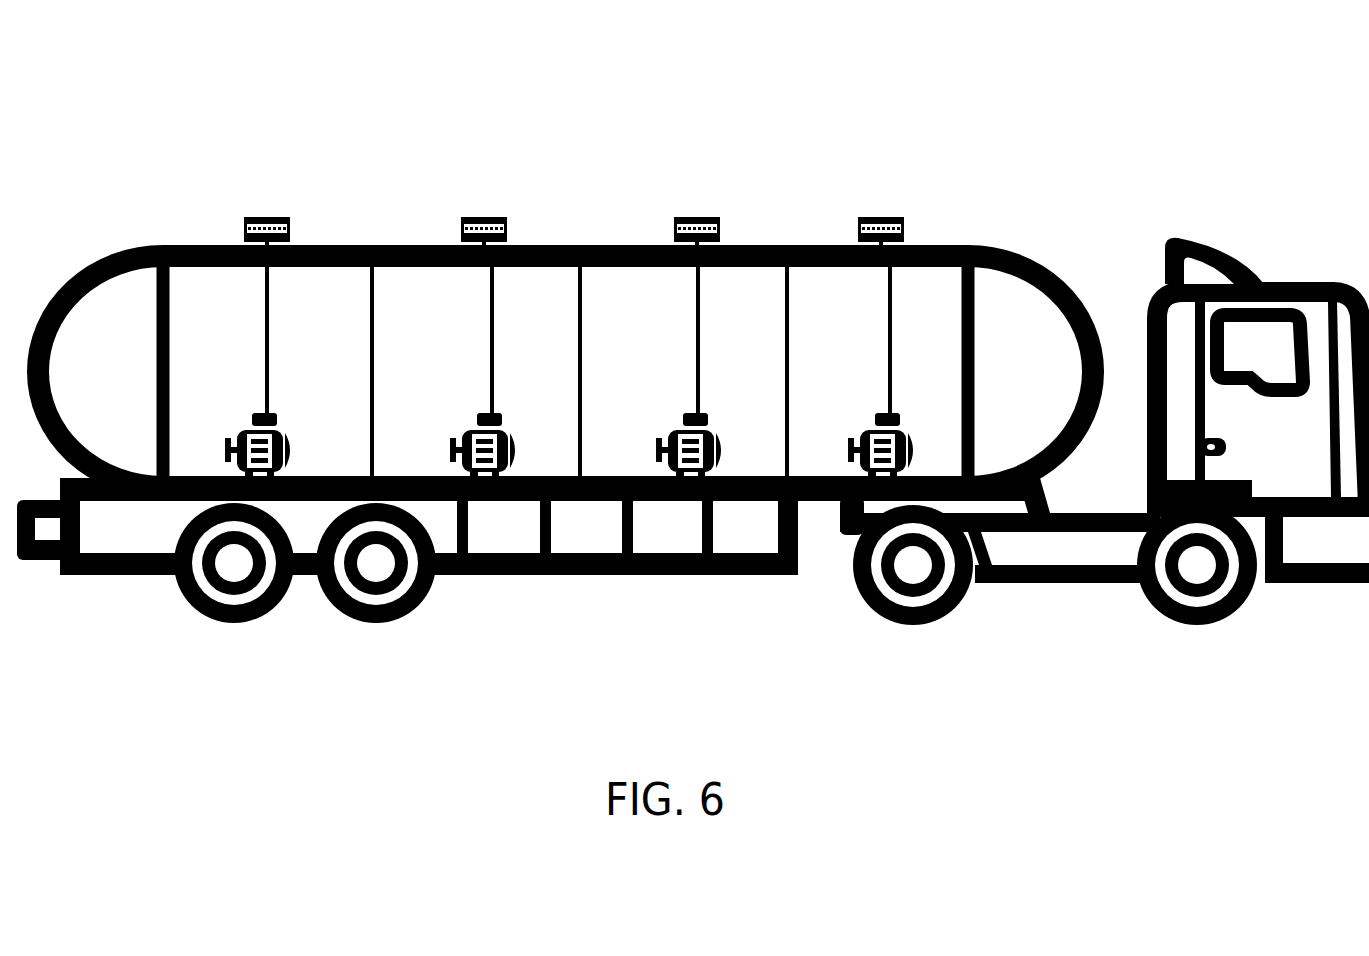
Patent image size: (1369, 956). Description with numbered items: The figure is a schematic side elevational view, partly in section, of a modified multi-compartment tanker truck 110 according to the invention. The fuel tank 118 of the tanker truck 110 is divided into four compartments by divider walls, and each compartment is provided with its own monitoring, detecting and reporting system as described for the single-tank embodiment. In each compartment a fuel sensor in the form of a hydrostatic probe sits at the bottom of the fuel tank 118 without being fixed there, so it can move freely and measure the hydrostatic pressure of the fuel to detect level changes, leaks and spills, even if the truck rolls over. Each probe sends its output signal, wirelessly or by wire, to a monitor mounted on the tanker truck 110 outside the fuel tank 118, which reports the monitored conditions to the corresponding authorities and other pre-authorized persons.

The multi-compartment tanker truck 110 is at (915, 168).
The fuel tank 118 is at (352, 245).